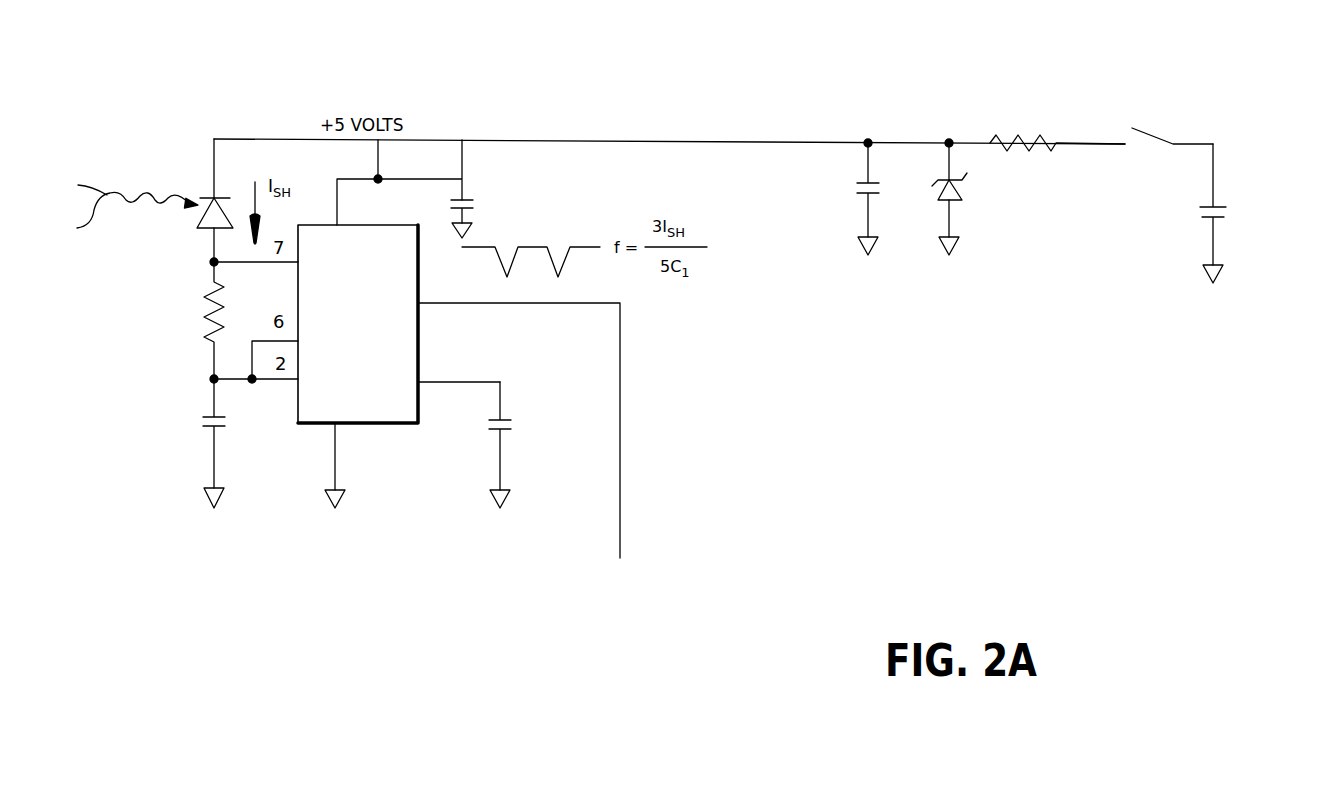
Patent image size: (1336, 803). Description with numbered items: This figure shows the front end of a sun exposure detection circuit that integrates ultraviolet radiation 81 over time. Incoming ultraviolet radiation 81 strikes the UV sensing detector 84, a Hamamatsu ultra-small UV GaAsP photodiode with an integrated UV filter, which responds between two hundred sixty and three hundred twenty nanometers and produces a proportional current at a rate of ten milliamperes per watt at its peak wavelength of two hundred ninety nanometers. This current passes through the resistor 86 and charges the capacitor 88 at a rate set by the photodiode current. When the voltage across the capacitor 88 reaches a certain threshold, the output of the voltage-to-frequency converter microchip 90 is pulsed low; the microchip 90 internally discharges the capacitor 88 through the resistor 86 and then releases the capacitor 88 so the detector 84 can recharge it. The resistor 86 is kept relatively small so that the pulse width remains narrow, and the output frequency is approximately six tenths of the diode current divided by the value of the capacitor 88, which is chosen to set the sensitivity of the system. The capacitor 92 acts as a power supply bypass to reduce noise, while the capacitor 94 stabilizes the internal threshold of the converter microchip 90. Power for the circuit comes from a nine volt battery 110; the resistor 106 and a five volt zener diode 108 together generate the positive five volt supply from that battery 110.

The ultraviolet radiation 81 is at (122, 202).
The UV sensing detector 84 is at (178, 191).
The resistor 86 is at (162, 320).
The capacitor 88 is at (154, 443).
The voltage-to-frequency converter microchip 90 is at (367, 388).
The capacitor 92 is at (525, 205).
The capacitor 94 is at (530, 445).
The resistor 106 is at (995, 136).
The five volt zener diode 108 is at (993, 200).
The nine volt battery 110 is at (1263, 213).